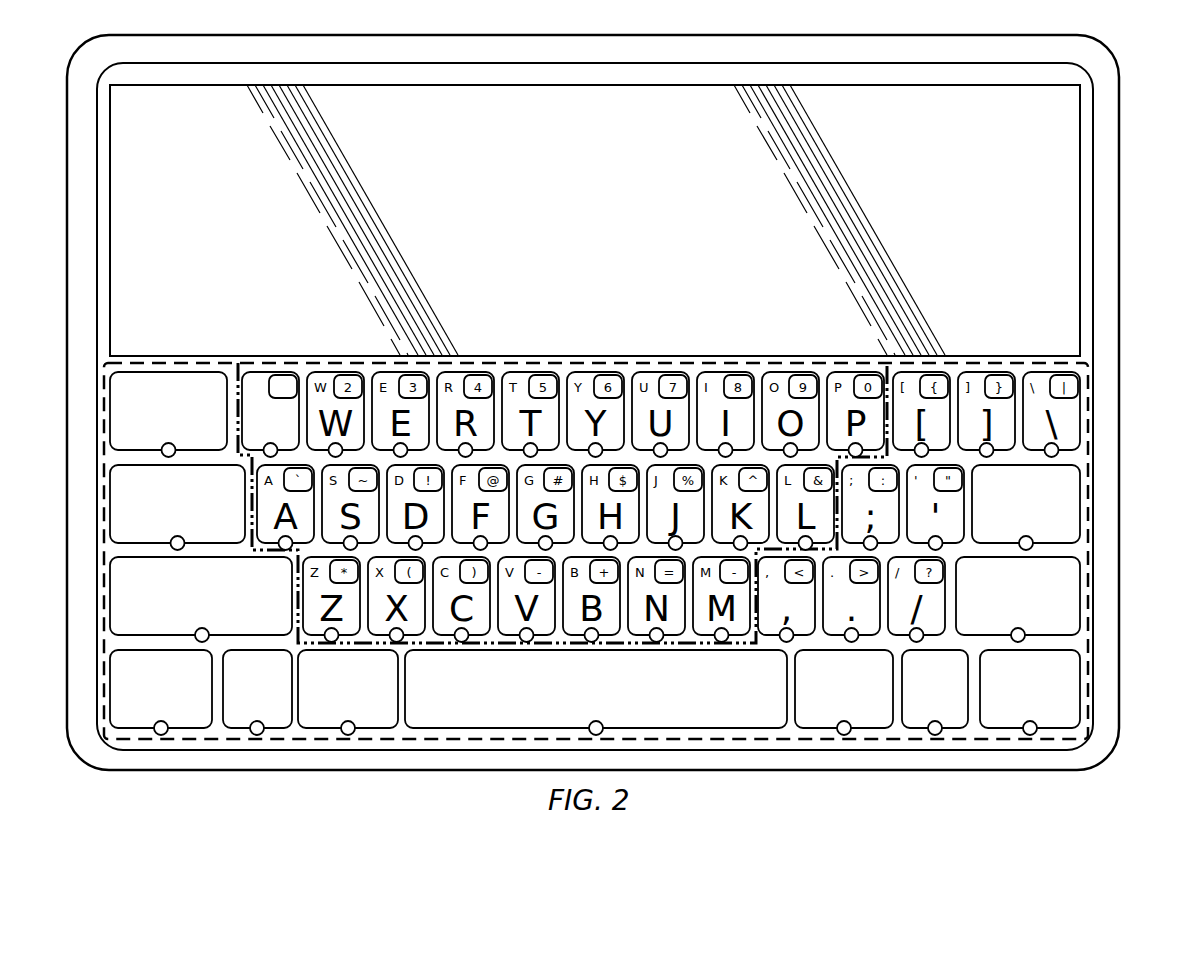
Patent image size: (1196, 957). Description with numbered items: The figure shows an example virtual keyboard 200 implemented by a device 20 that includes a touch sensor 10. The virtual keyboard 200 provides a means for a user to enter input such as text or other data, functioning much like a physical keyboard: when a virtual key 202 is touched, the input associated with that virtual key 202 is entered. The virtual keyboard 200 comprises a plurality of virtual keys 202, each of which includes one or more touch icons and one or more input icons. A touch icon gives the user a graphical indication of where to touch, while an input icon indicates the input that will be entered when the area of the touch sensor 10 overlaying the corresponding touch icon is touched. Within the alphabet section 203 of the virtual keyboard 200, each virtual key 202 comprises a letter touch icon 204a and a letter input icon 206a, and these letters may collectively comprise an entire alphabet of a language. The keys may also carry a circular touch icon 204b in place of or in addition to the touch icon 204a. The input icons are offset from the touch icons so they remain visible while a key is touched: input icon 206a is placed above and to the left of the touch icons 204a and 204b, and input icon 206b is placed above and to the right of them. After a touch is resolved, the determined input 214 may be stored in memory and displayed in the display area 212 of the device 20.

The touch sensor 10 is at (1092, 208).
The device 20 is at (1122, 270).
The virtual keyboard 200 is at (594, 364).
The virtual key 202 is at (253, 372).
The alphabet section 203 is at (250, 505).
The touch icon 204a is at (258, 412).
The touch icon 204b is at (262, 447).
The input icon 206a is at (250, 378).
The input icon 206b is at (296, 378).
The display area 212 is at (132, 179).
The determined input 214 is at (151, 107).